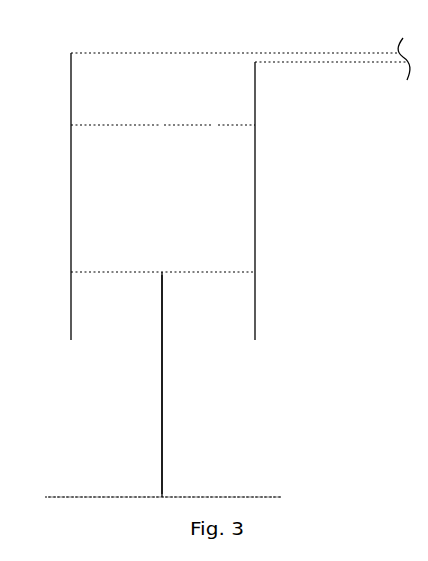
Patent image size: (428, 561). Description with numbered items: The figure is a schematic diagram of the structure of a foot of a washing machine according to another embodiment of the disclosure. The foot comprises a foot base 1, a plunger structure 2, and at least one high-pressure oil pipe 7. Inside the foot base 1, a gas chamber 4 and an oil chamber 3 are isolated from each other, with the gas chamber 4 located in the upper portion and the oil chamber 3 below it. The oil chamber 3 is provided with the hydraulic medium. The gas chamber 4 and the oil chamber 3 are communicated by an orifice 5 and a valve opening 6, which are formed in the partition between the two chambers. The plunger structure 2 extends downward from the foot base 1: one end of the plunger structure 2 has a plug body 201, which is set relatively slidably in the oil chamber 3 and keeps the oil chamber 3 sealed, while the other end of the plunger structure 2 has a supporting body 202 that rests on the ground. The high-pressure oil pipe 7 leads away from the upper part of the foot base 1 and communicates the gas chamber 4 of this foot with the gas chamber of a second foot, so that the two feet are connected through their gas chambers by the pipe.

The foot base 1 is at (255, 232).
The plunger structure 2 is at (162, 413).
The plug body 201 is at (198, 272).
The supporting body 202 is at (248, 497).
The oil chamber 3 is at (95, 232).
The gas chamber 4 is at (93, 98).
The orifice 5 is at (162, 125).
The valve opening 6 is at (216, 125).
The high-pressure oil pipe 7 is at (285, 58).